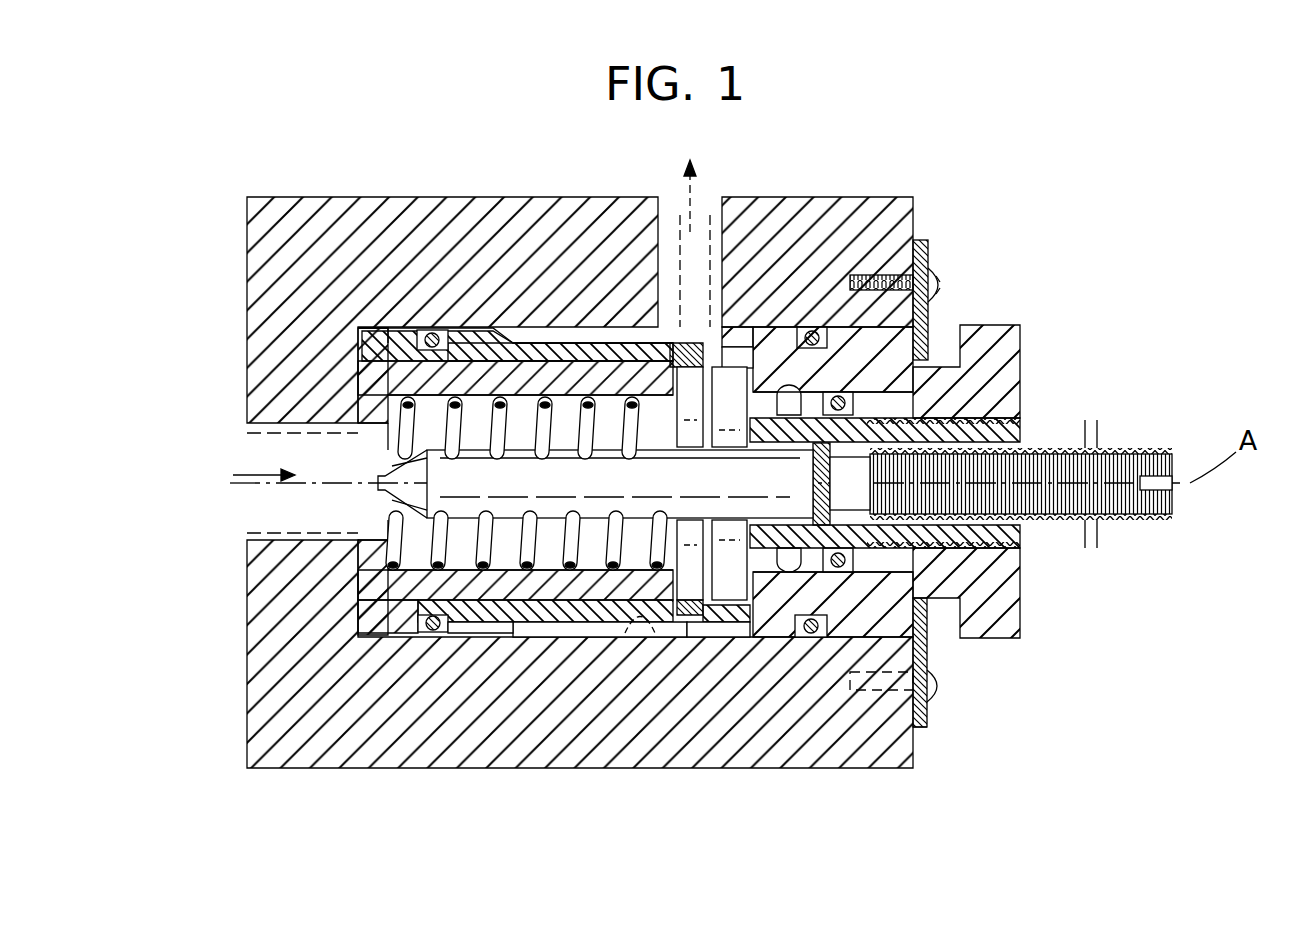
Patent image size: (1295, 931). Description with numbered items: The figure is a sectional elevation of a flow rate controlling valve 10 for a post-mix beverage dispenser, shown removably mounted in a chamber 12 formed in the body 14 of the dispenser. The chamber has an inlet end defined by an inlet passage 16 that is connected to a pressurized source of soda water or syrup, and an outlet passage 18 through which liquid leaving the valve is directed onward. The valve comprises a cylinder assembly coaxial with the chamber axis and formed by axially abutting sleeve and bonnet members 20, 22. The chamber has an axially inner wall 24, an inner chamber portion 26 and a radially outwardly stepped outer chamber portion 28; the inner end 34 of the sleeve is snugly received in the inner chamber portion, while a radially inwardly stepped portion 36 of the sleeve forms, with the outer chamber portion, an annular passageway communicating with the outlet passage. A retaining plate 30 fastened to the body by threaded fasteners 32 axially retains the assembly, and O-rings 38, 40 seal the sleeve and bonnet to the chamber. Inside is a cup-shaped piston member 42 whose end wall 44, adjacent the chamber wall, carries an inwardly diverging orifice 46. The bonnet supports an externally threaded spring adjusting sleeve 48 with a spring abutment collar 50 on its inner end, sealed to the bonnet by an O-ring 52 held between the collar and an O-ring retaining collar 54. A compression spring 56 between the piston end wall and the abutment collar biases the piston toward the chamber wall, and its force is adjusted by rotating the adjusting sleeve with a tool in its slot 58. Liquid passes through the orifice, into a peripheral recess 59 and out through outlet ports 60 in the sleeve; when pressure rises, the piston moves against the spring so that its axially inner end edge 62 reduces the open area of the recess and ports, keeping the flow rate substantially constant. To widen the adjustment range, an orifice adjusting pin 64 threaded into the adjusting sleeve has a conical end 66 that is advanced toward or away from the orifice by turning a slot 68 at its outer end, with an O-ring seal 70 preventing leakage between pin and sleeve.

The flow rate controlling valve 10 is at (962, 178).
The chamber 12 is at (540, 320).
The body 14 is at (278, 194).
The inlet passage 16 is at (353, 495).
The outlet passage 18 is at (683, 182).
The sleeve member 20 is at (531, 632).
The bonnet member 22 is at (1033, 338).
The axially inner wall 24 is at (398, 328).
The inner chamber portion 26 is at (487, 636).
The outer chamber portion 28 is at (626, 634).
The retaining plate 30 is at (928, 712).
The threaded fasteners 32 is at (938, 283).
The inner end 34 is at (387, 620).
The radially inwardly stepped portion 36 is at (578, 342).
The O-ring 38 is at (437, 330).
The O-ring 40 is at (803, 337).
The piston member 42 is at (396, 606).
The end wall 44 is at (360, 583).
The orifice 46 is at (377, 507).
The spring adjusting sleeve 48 is at (1062, 420).
The spring abutment collar 50 is at (838, 368).
The O-ring 52 is at (812, 627).
The O-ring retaining collar 54 is at (855, 566).
The compression spring 56 is at (827, 514).
The slot 58 is at (1093, 533).
The peripheral recess 59 is at (748, 352).
The outlet ports 60 is at (730, 345).
The axially inner end edge 62 is at (678, 602).
The orifice adjusting pin 64 is at (553, 532).
The end 66 is at (392, 458).
The slot 68 is at (1168, 487).
The O-ring seal 70 is at (912, 425).